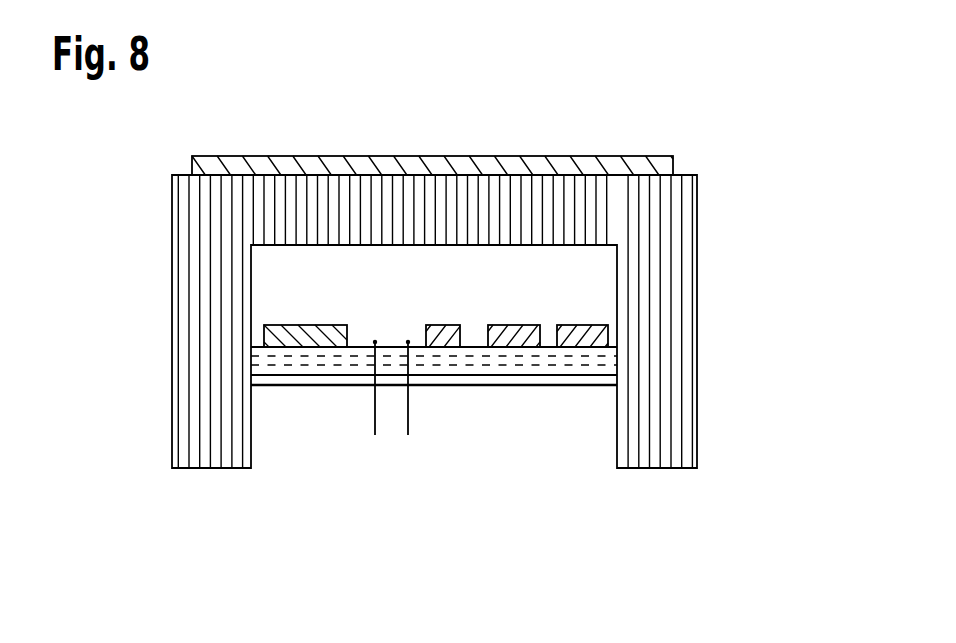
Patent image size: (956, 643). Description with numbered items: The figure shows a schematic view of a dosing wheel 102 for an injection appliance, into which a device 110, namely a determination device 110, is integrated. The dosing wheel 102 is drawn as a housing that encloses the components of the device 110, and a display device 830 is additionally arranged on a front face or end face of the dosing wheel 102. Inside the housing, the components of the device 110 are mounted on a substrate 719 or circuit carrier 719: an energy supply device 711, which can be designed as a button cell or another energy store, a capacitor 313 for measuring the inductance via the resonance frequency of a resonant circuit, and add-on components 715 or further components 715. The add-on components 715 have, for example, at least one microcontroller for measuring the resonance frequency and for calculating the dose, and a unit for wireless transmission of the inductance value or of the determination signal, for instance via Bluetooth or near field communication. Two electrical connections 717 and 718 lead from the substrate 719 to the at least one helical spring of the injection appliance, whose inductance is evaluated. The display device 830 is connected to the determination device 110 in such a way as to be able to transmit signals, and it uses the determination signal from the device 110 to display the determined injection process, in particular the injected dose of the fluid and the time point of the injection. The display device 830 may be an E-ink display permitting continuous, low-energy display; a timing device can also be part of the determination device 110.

The dosing wheel 102 is at (666, 213).
The display device 830 is at (660, 165).
The energy supply device 711 is at (306, 333).
The capacitor 313 is at (447, 326).
The add-on components 715 is at (610, 330).
The electrical connection 717 is at (375, 419).
The electrical connection 718 is at (408, 419).
The substrate 719 is at (558, 385).
The device 110 is at (390, 497).